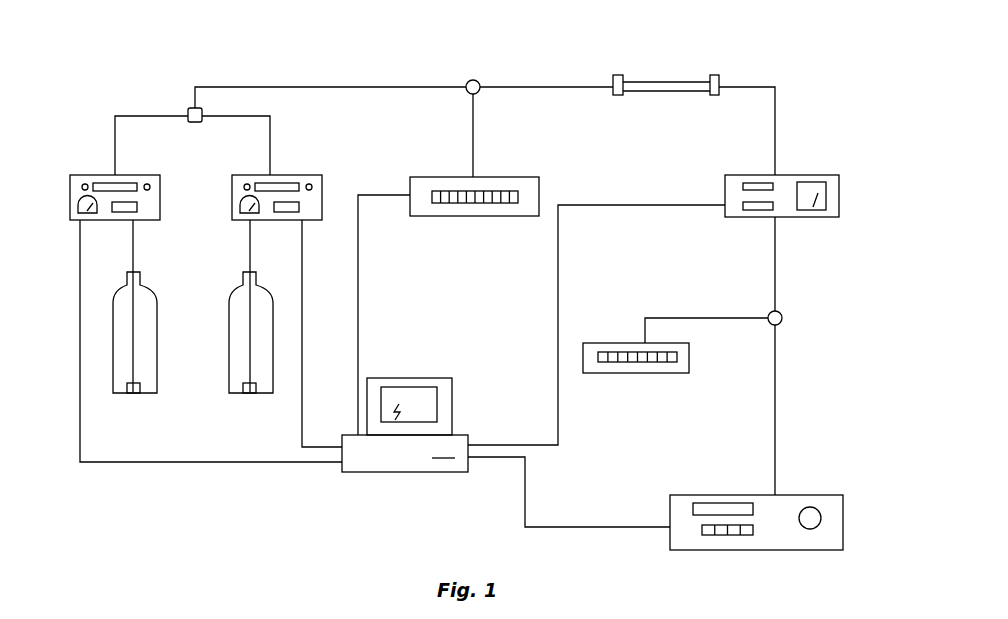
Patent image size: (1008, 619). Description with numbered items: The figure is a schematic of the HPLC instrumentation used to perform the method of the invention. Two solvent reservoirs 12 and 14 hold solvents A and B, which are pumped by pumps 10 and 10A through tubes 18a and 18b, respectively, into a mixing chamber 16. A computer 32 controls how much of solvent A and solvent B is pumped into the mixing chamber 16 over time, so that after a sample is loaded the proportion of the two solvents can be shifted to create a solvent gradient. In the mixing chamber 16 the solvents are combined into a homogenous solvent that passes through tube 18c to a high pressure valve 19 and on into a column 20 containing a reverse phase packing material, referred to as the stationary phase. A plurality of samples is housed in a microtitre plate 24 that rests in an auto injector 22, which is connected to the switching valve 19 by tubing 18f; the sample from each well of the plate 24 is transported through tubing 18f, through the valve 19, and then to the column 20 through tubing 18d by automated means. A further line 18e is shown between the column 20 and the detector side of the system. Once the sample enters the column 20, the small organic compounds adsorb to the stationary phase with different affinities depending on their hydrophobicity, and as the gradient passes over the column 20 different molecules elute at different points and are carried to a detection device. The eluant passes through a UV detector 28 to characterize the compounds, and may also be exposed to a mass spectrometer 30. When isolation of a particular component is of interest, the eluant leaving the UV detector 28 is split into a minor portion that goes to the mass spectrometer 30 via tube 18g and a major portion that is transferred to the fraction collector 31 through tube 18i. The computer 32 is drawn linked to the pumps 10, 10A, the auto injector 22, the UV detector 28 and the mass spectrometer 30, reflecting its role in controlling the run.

The pump 10 is at (152, 172).
The pump 10A is at (310, 173).
The solvent reservoir 12 is at (126, 399).
The solvent reservoir 14 is at (242, 399).
The mixing chamber 16 is at (188, 106).
The tube 18a is at (113, 144).
The tube 18b is at (273, 150).
The tube 18c is at (342, 86).
The tubing 18d is at (559, 90).
The optical fiber 18e is at (778, 125).
The tubing 18f is at (470, 138).
The tube 18g is at (778, 415).
The tube 18i is at (685, 316).
The high pressure valve 19 is at (481, 80).
The column 20 is at (660, 78).
The auto injector 22 is at (500, 205).
The microtitre plate 24 is at (461, 205).
The UV detector 28 is at (842, 190).
The mass spectrometer 30 is at (847, 520).
The fraction collector 31 is at (617, 376).
The computer 32 is at (407, 476).